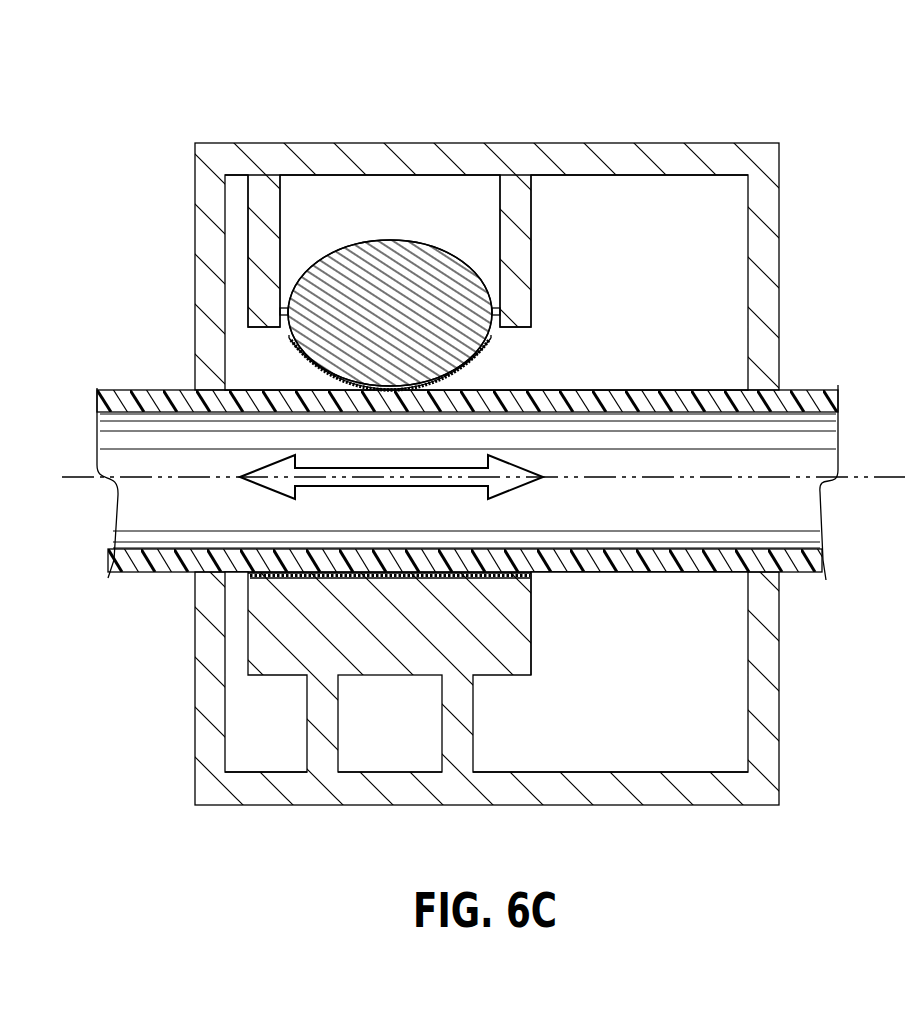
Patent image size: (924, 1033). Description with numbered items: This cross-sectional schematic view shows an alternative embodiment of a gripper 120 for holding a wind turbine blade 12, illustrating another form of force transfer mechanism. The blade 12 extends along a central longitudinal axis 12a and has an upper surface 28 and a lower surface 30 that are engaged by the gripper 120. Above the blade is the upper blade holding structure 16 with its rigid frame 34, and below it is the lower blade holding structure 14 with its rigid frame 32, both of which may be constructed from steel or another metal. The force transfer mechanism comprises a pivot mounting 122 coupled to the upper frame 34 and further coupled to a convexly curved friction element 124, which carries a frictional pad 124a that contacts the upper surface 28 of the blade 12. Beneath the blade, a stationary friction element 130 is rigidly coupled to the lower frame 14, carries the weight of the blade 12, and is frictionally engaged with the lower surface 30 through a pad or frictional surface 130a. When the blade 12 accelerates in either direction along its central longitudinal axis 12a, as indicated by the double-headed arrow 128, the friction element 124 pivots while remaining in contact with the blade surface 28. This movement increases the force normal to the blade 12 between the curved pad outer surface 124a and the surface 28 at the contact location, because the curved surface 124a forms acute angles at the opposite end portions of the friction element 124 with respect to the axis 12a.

The wind turbine blade 12 is at (467, 484).
The central longitudinal axis 12a is at (908, 477).
The lower blade holding structure 14 is at (487, 692).
The upper blade holding structure 16 is at (460, 225).
The upper surface 28 is at (157, 390).
The lower surface 30 is at (135, 573).
The rigid frame 32 is at (457, 795).
The rigid frame 34 is at (522, 152).
The gripper 120 is at (490, 452).
The pivot mounting 122 is at (260, 243).
The convexly curved friction element 124 is at (439, 294).
The friction pad 124a is at (478, 388).
The double-headed arrow 128 is at (277, 486).
The stationary friction element 130 is at (431, 600).
The frictional surface 130a is at (493, 572).